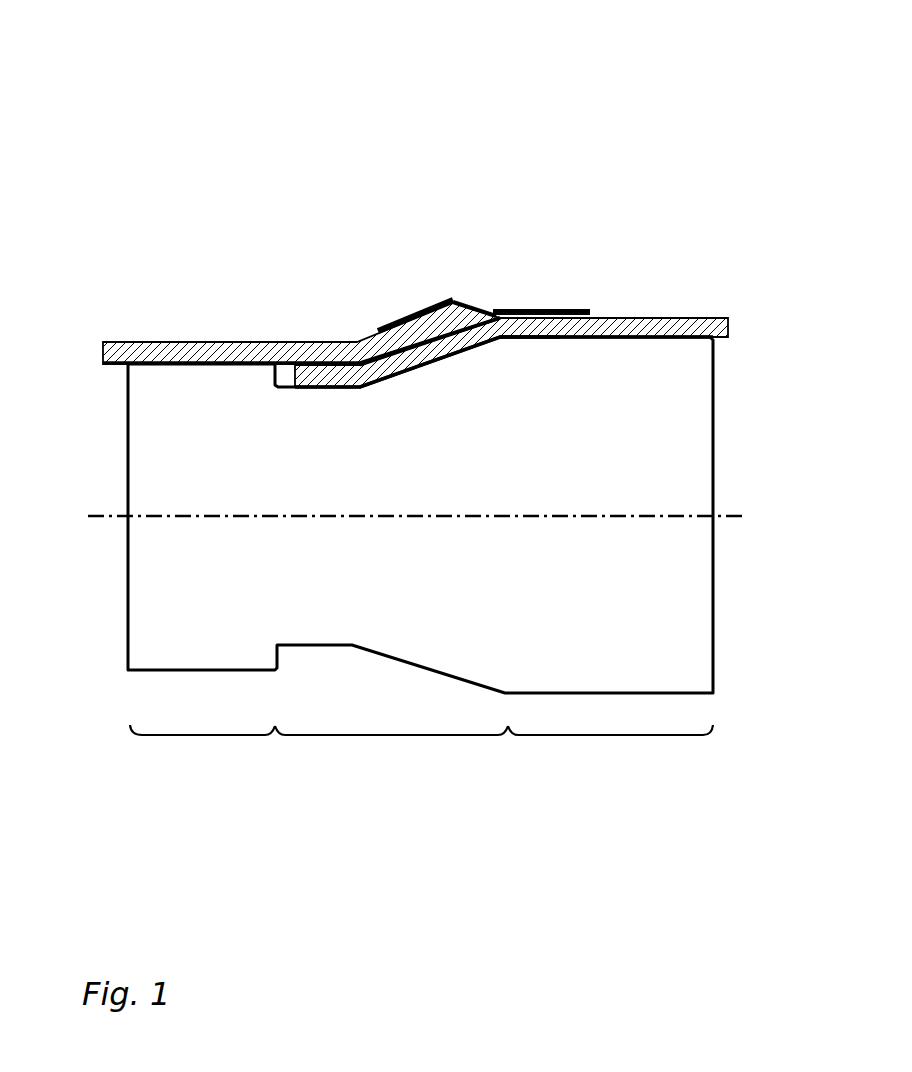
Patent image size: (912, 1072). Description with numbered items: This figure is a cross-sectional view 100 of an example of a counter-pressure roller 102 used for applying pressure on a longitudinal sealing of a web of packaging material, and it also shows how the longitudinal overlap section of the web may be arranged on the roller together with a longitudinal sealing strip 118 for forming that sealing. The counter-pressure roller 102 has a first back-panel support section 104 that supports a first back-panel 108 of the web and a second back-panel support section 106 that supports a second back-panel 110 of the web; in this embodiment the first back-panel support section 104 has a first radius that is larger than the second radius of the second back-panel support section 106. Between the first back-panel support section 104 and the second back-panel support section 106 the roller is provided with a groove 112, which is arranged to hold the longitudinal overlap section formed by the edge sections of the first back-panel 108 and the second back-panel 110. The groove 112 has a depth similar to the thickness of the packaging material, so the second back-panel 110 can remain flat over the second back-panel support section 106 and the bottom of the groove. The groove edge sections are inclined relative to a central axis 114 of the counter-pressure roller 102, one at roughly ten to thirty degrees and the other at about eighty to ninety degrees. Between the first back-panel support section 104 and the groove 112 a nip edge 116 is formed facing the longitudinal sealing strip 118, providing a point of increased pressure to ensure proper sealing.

The cross-sectional view 100 is at (62, 163).
The counter-pressure roller 102 is at (125, 473).
The first back-panel support section 104 is at (612, 735).
The second back-panel support section 106 is at (205, 735).
The first back-panel 108 is at (652, 318).
The second back-panel 110 is at (195, 342).
The groove 112 is at (393, 735).
The central axis 114 is at (748, 516).
The nip edge 116 is at (510, 338).
The longitudinal sealing strip 118 is at (520, 309).